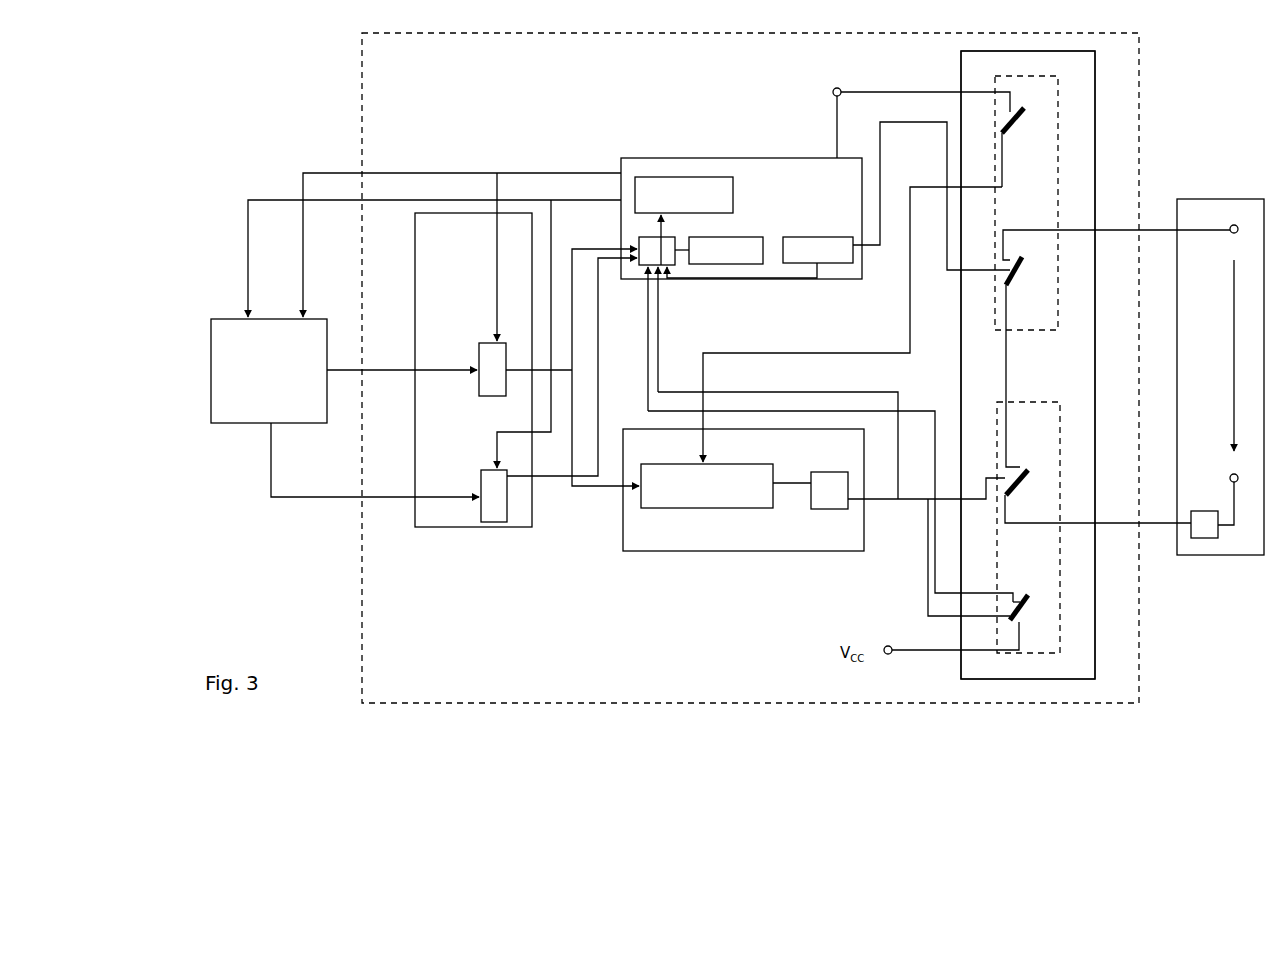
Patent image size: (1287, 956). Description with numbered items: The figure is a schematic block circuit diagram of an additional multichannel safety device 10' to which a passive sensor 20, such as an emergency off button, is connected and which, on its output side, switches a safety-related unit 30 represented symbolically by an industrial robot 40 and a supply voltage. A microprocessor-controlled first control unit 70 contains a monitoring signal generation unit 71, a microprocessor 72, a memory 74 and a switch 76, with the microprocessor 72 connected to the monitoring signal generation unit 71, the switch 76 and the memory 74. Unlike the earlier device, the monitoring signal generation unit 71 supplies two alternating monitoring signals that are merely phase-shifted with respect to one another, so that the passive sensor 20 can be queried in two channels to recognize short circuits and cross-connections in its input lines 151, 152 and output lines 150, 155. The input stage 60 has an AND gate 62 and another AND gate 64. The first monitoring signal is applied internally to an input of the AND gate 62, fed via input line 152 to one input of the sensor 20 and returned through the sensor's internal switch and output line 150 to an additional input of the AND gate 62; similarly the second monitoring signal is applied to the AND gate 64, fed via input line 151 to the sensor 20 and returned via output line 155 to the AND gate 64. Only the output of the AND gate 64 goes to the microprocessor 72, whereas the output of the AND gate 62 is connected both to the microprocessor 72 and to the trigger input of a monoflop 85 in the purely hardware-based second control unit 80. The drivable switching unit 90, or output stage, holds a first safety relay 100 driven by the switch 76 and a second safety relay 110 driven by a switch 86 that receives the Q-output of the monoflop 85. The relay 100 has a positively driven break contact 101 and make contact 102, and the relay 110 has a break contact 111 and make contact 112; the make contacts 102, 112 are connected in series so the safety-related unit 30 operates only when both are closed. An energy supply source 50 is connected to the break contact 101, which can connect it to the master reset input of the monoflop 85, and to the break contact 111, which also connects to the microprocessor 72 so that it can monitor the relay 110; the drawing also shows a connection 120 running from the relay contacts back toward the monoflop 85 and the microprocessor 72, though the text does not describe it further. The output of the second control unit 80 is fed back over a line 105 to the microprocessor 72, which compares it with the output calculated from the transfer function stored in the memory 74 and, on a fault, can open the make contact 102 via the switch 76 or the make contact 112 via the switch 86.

The multichannel safety device 10' is at (714, 368).
The sensor 20 is at (260, 424).
The safety-related unit 30 is at (1180, 199).
The industrial robot 40 is at (1208, 538).
The energy supply source 50 is at (855, 68).
The input stage 60 is at (480, 527).
The AND gate 62 is at (496, 396).
The AND gate 64 is at (507, 522).
The first control unit 70 is at (645, 158).
The monitoring signal generation unit 71 is at (678, 177).
The microprocessor 72 is at (639, 250).
The memory 74 is at (726, 237).
The switch 76 is at (828, 263).
The second control unit 80 is at (673, 551).
The monoflop 85 is at (728, 508).
The switch 86 is at (840, 509).
The drivable switching unit 90 is at (1098, 660).
The first safety relay 100 is at (1058, 140).
The break contact 101 is at (1012, 130).
The make contact 102 is at (1013, 275).
The line 105 is at (897, 503).
The second safety relay 110 is at (1062, 625).
The break contact 111 is at (1016, 620).
The make contact 112 is at (1015, 488).
The feedback line 120 is at (706, 374).
The output line 150 is at (341, 370).
The input line 151 is at (276, 200).
The input line 152 is at (418, 173).
The output line 155 is at (312, 497).